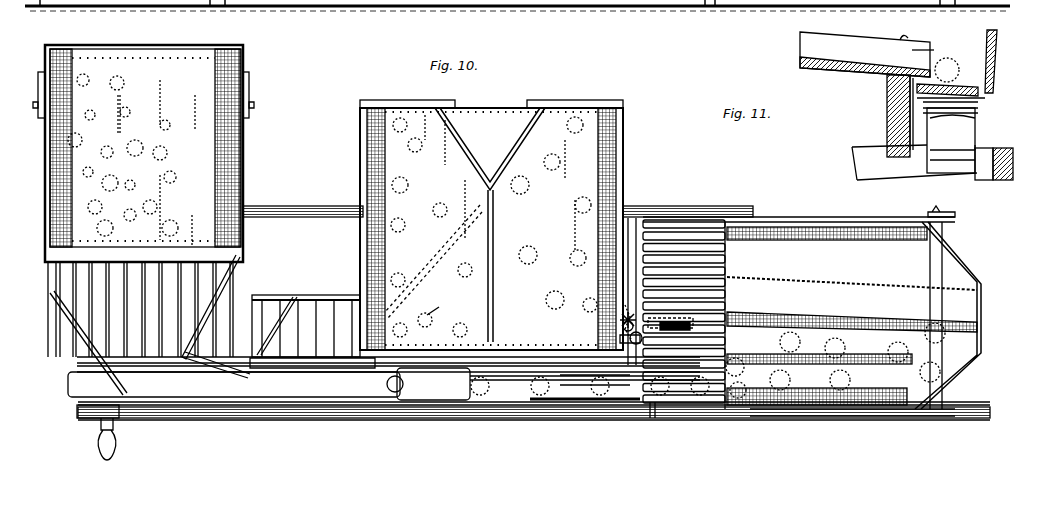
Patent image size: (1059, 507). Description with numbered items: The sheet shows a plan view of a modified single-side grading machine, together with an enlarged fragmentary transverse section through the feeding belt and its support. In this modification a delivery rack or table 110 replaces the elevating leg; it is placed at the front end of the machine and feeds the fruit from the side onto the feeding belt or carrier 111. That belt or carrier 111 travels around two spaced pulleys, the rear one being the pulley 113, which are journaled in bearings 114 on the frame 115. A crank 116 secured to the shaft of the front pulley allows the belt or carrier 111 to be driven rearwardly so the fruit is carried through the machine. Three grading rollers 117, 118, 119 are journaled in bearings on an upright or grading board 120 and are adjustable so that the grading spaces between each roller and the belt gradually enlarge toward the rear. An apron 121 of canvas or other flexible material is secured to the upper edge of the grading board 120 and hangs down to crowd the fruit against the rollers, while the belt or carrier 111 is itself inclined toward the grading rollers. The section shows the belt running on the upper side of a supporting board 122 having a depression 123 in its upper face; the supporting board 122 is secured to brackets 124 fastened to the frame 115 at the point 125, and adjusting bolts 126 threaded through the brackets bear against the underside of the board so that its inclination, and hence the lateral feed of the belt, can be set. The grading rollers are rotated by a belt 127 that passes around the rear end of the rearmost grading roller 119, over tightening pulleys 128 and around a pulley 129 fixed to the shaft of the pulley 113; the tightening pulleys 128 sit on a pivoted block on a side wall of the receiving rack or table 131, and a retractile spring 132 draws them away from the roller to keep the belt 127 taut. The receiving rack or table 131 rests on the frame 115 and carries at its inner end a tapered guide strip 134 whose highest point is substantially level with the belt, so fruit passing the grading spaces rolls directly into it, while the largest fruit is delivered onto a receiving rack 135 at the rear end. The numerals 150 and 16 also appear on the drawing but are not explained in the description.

In FIG. 10, the delivery rack or table 110 is at (207, 175).
In FIG. 11, the delivery rack or table 110 is at (865, 54).
In FIG. 10, the feeding belt or carrier 111 is at (355, 395).
In FIG. 11, the feeding belt or carrier 111 is at (943, 82).
In FIG. 11, the pulley 113 is at (914, 144).
In FIG. 10, the bearings 114 is at (655, 420).
In FIG. 10, the frame 115 is at (450, 402).
In FIG. 11, the frame 115 is at (1002, 183).
In FIG. 10, the crank 116 is at (115, 428).
In FIG. 10, the grading roller 117 is at (325, 392).
In FIG. 10, the grading roller 118 is at (395, 394).
In FIG. 10, the grading roller 119 is at (590, 378).
In FIG. 10, the upright or grading board 120 is at (505, 365).
In FIG. 10, the apron 121 is at (433, 384).
In FIG. 11, the supporting board 122 is at (985, 93).
In FIG. 11, the depression 123 is at (955, 85).
In FIG. 11, the brackets 124 is at (978, 118).
In FIG. 11, the fastening point 125 is at (912, 130).
In FIG. 11, the adjusting bolts 126 is at (978, 105).
In FIG. 10, the belt 127 is at (620, 340).
In FIG. 10, the tightening pulleys 128 is at (618, 320).
In FIG. 10, the pulley 129 is at (692, 338).
In FIG. 10, the receiving rack or table 131 is at (578, 245).
In FIG. 10, the retractile spring 132 is at (625, 305).
In FIG. 10, the tapered guide strip 134 is at (425, 345).
In FIG. 10, the receiving rack 135 is at (812, 311).
In FIG. 10, the slat 150 is at (668, 318).
In FIG. 10, the bar 16 is at (532, 402).